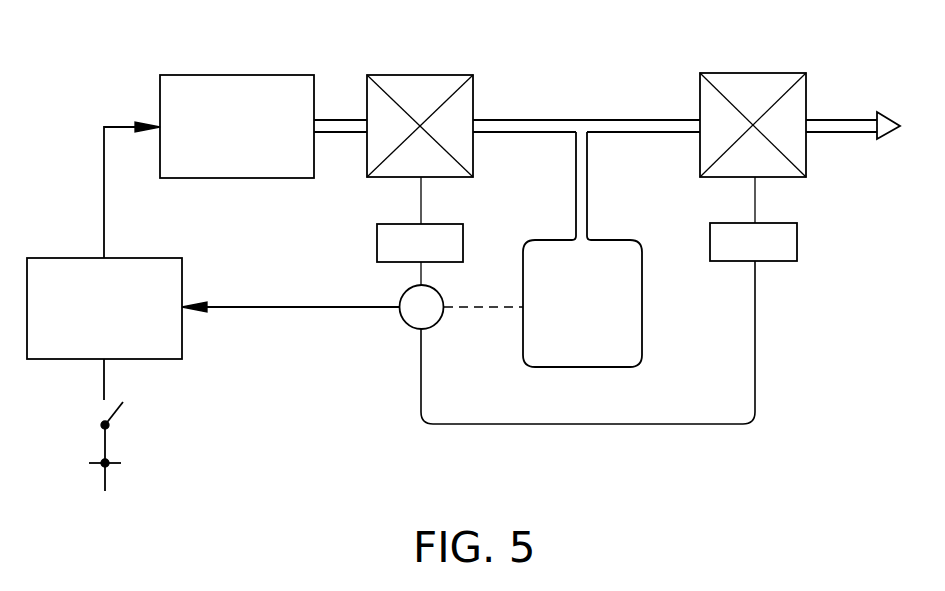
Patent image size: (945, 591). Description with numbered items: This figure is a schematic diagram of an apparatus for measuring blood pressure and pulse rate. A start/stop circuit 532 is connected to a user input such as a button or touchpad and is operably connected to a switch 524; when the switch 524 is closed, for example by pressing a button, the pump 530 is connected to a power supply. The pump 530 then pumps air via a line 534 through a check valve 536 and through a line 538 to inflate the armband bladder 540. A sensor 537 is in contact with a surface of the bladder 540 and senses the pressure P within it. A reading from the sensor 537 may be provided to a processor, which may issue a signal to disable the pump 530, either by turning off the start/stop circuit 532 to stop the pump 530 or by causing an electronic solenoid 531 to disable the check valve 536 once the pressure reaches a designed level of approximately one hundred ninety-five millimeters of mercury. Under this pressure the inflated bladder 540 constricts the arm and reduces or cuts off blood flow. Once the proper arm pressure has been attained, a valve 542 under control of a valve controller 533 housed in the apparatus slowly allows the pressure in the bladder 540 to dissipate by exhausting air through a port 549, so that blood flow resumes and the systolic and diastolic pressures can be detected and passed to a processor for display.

The pump 530 is at (195, 73).
The line 534 is at (332, 118).
The check valve 536 is at (415, 73).
The line 538 is at (560, 118).
The valve 542 is at (714, 72).
The port 549 is at (843, 117).
The electronic solenoid 531 is at (437, 222).
The valve controller 533 is at (768, 222).
The armband bladder 540 is at (607, 238).
The sensor 537 is at (400, 318).
The start/stop circuit 532 is at (135, 257).
The switch 524 is at (113, 395).